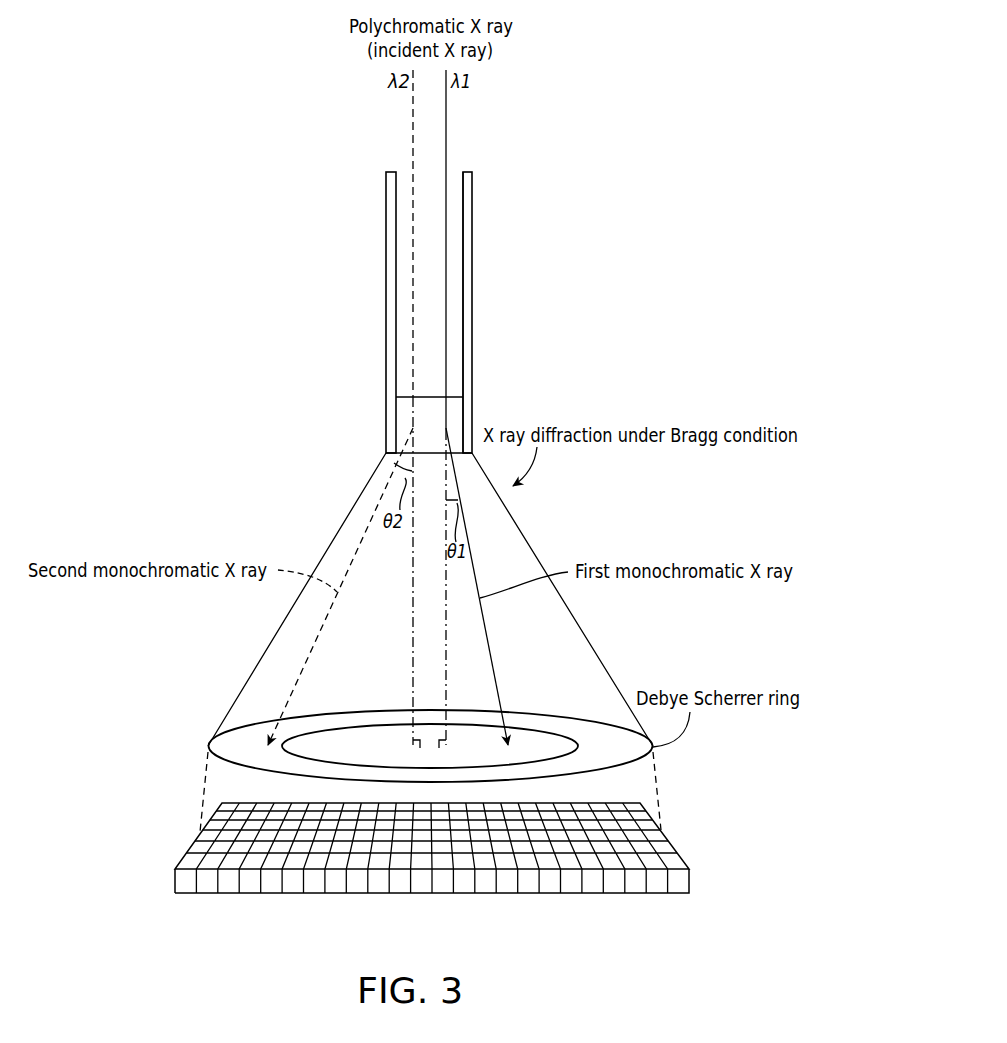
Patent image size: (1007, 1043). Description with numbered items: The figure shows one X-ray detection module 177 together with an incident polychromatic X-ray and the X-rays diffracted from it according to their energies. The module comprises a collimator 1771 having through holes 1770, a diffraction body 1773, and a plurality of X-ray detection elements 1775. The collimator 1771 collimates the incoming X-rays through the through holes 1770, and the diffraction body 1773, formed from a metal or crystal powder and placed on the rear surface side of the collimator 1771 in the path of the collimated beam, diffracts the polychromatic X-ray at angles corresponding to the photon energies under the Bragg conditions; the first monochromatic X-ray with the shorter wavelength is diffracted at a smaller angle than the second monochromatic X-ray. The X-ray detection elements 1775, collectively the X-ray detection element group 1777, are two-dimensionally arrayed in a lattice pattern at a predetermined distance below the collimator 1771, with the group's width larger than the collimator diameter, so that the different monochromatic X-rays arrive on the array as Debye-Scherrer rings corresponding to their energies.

The X-ray detection module 177 is at (631, 86).
The through holes 1770 is at (430, 175).
The collimator 1771 is at (472, 192).
The diffraction body 1773 is at (403, 421).
The X-ray detection elements 1775 is at (440, 884).
The X-ray detection element group 1777 is at (669, 821).